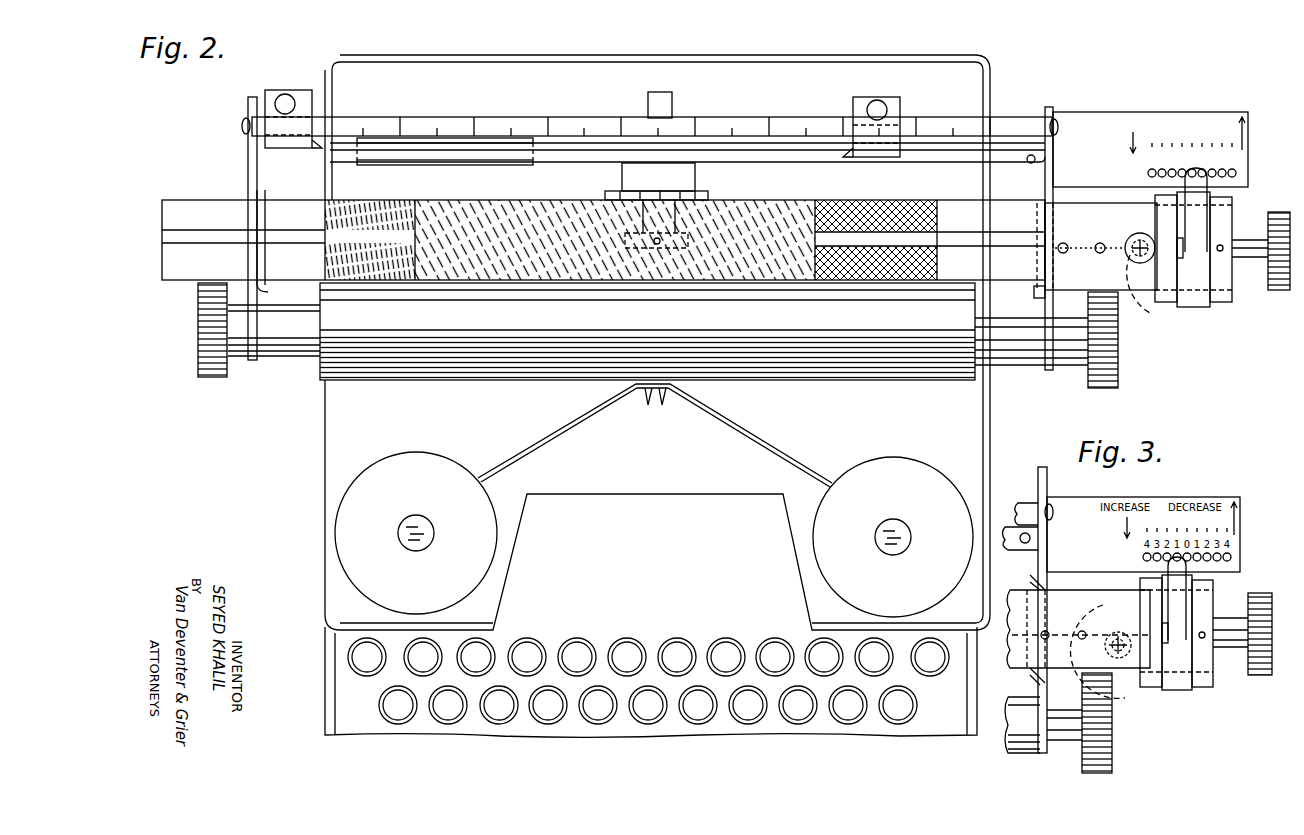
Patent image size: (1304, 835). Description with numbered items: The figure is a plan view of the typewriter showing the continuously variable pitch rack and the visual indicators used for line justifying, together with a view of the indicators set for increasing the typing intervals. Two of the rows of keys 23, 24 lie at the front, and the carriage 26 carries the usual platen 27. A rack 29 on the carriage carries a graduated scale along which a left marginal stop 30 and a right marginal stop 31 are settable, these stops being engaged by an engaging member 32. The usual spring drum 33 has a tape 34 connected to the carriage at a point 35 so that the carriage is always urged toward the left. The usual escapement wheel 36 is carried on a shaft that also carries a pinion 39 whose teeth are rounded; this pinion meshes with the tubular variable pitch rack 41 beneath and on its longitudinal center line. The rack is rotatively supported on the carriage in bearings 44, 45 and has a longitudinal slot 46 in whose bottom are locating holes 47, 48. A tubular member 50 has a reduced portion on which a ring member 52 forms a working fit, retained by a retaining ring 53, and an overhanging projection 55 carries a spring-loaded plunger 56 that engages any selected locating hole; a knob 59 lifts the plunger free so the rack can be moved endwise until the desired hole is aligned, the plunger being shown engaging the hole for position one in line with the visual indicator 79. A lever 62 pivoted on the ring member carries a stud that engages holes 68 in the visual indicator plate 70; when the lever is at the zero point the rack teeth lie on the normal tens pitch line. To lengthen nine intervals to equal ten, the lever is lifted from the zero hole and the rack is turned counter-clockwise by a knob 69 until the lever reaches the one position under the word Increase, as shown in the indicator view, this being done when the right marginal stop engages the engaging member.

In FIG. 2, the row of keys 23 is at (693, 712).
In FIG. 2, the row of keys 24 is at (677, 655).
In FIG. 2, the carriage 26 is at (246, 160).
In FIG. 2, the platen 27 is at (476, 383).
In FIG. 2, the rack 29 is at (342, 116).
In FIG. 3, the rack 29 is at (1020, 502).
In FIG. 2, the left marginal stop 30 is at (304, 90).
In FIG. 2, the right marginal stop 31 is at (900, 108).
In FIG. 2, the engaging member 32 is at (672, 104).
In FIG. 2, the spring drum 33 is at (462, 165).
In FIG. 2, the tape 34 is at (808, 153).
In FIG. 3, the tape 34 is at (1008, 550).
In FIG. 2, the connection point 35 is at (1032, 166).
In FIG. 2, the escapement wheel 36 is at (607, 195).
In FIG. 2, the pinion 39 is at (690, 242).
In FIG. 2, the continuously variable pitch rack 41 is at (960, 216).
In FIG. 2, the bearing 44 is at (262, 195).
In FIG. 2, the bearing 45 is at (1034, 297).
In FIG. 3, the bearing 45 is at (1030, 675).
In FIG. 2, the longitudinal slot 46 is at (1018, 246).
In FIG. 3, the longitudinal slot 46 is at (1018, 627).
In FIG. 2, the locating hole 47 is at (1066, 243).
In FIG. 2, the locating hole 48 is at (1103, 243).
In FIG. 2, the tubular member 50 is at (1172, 304).
In FIG. 3, the tubular member 50 is at (1150, 688).
In FIG. 2, the ring member 52 is at (1192, 308).
In FIG. 3, the ring member 52 is at (1175, 690).
In FIG. 2, the retaining ring 53 is at (1220, 303).
In FIG. 3, the retaining ring 53 is at (1205, 688).
In FIG. 3, the overhanging projection 55 is at (1152, 678).
In FIG. 2, the plunger 56 is at (1168, 303).
In FIG. 2, the knob 59 is at (1127, 256).
In FIG. 3, the knob 59 is at (1105, 612).
In FIG. 2, the lever 62 is at (1208, 190).
In FIG. 3, the lever 62 is at (1180, 585).
In FIG. 2, the holes 68 is at (1236, 172).
In FIG. 2, the knob 69 is at (1276, 292).
In FIG. 3, the knob 69 is at (1262, 594).
In FIG. 2, the visual indicator plate 70 is at (1075, 112).
In FIG. 2, the visual indicator 79 is at (1125, 216).
In FIG. 3, the visual indicator 79 is at (1077, 603).